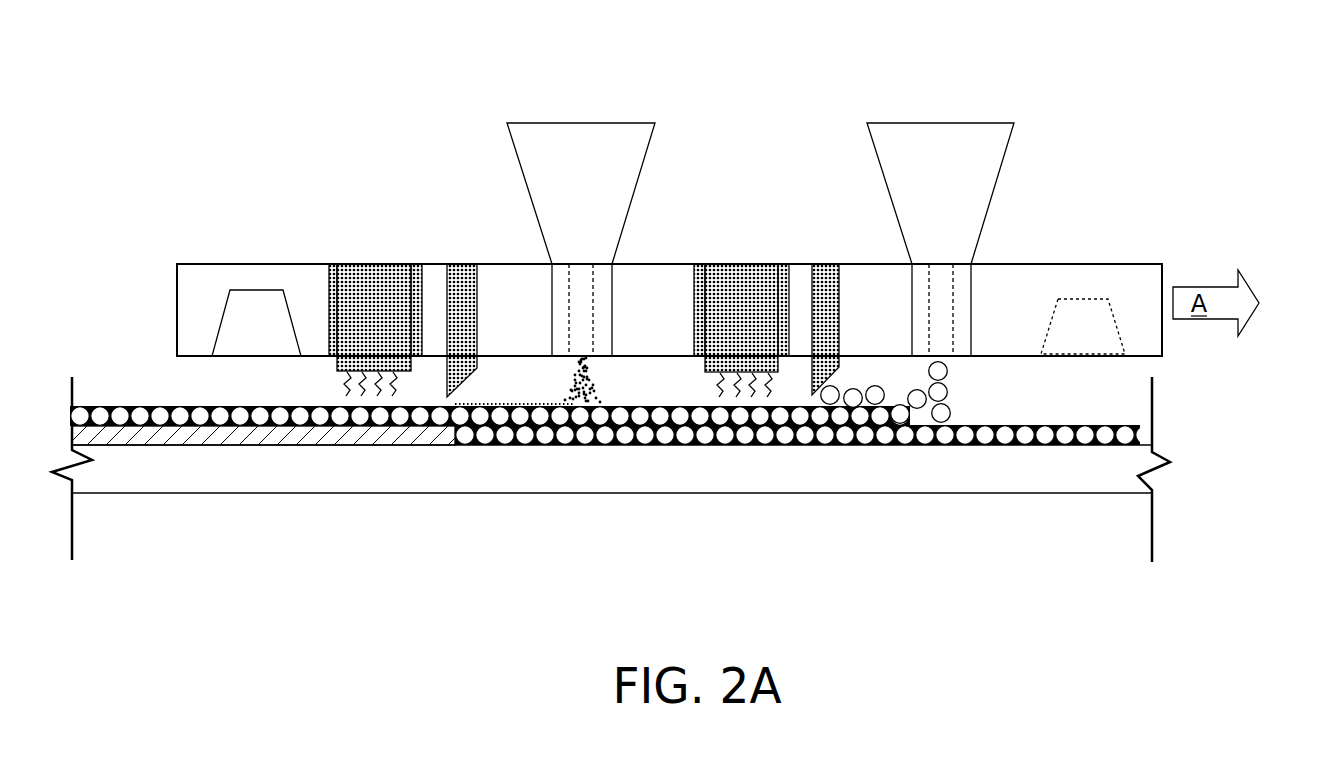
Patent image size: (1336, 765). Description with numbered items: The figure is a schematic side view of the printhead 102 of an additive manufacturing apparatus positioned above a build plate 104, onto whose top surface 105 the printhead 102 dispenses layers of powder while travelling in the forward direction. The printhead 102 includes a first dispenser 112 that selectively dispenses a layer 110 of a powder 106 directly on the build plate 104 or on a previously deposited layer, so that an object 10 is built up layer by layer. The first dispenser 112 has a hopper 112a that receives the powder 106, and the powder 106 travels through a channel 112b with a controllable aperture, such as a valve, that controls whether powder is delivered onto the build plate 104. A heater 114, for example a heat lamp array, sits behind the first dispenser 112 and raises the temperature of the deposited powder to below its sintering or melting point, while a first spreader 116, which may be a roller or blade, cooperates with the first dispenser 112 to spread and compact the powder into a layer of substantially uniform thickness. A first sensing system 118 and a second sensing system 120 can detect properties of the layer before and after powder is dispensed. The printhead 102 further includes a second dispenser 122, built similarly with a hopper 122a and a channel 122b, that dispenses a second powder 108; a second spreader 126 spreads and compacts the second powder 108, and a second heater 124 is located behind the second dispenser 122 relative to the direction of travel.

The printhead 102 is at (198, 240).
The build plate 104 is at (368, 486).
The top surface 105 is at (1147, 441).
The powder 106 is at (948, 387).
The second powder 108 is at (593, 387).
The object 10 is at (240, 437).
The layer 110 is at (66, 414).
The first dispenser 112 is at (973, 206).
The hopper 112a is at (905, 187).
The channel 112b is at (948, 313).
The heater 114 is at (726, 332).
The first spreader 116 is at (813, 268).
The first sensing system 118 is at (1061, 342).
The second sensing system 120 is at (229, 346).
The second dispenser 122 is at (578, 197).
The hopper 122a is at (561, 187).
The channel 122b is at (592, 318).
The second heater 124 is at (349, 332).
The second spreader 126 is at (453, 268).